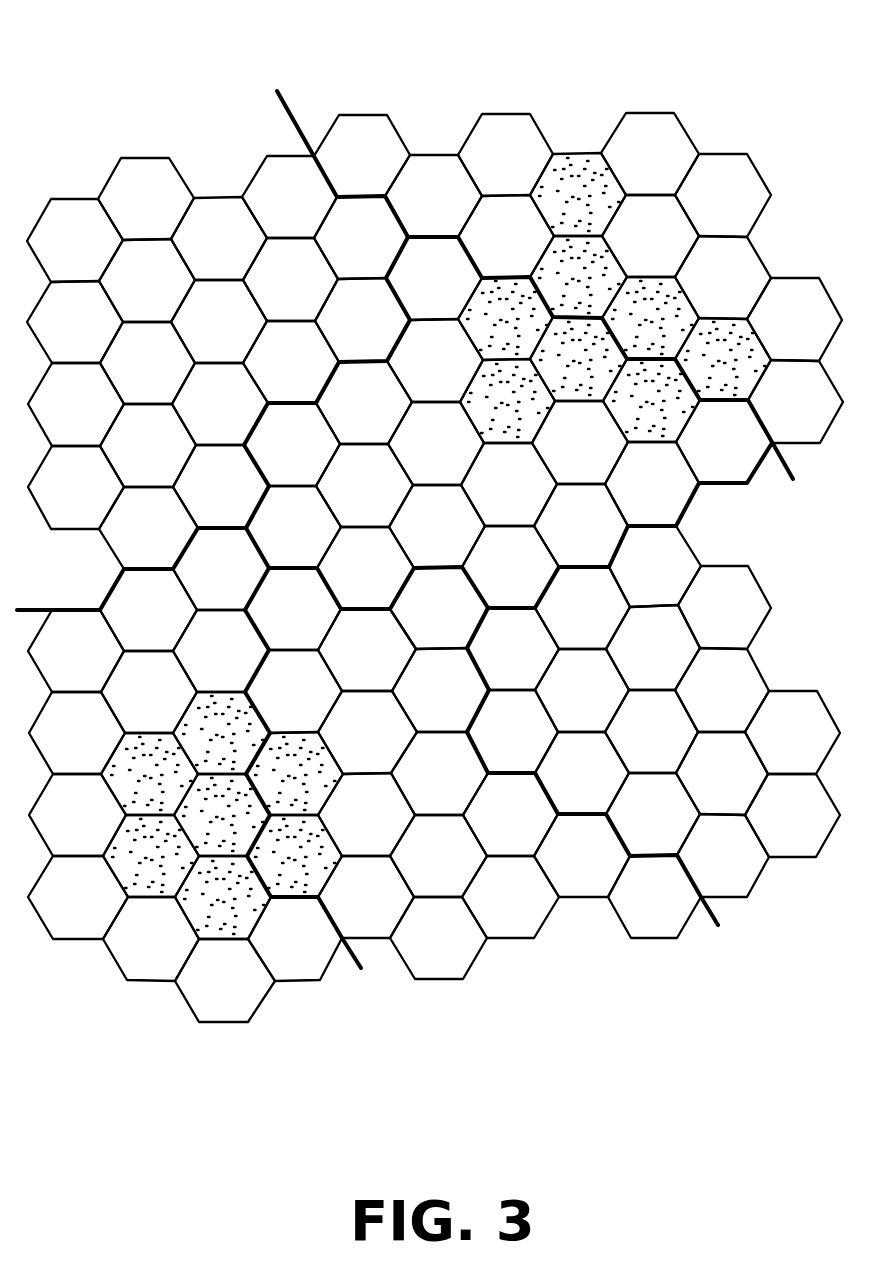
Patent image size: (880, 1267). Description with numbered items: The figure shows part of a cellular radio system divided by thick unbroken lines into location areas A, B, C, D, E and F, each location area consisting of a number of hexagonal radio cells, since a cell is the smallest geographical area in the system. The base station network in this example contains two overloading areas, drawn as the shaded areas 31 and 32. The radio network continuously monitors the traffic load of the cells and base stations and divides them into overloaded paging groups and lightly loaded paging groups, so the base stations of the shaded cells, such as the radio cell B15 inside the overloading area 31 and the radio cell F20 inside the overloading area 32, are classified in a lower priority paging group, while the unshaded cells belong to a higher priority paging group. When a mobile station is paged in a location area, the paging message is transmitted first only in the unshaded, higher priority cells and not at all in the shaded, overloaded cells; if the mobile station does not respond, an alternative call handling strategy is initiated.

The overloading area 31 is at (614, 230).
The overloading area 32 is at (198, 855).
The radio cell B15 is at (578, 194).
The radio cell F20 is at (151, 856).